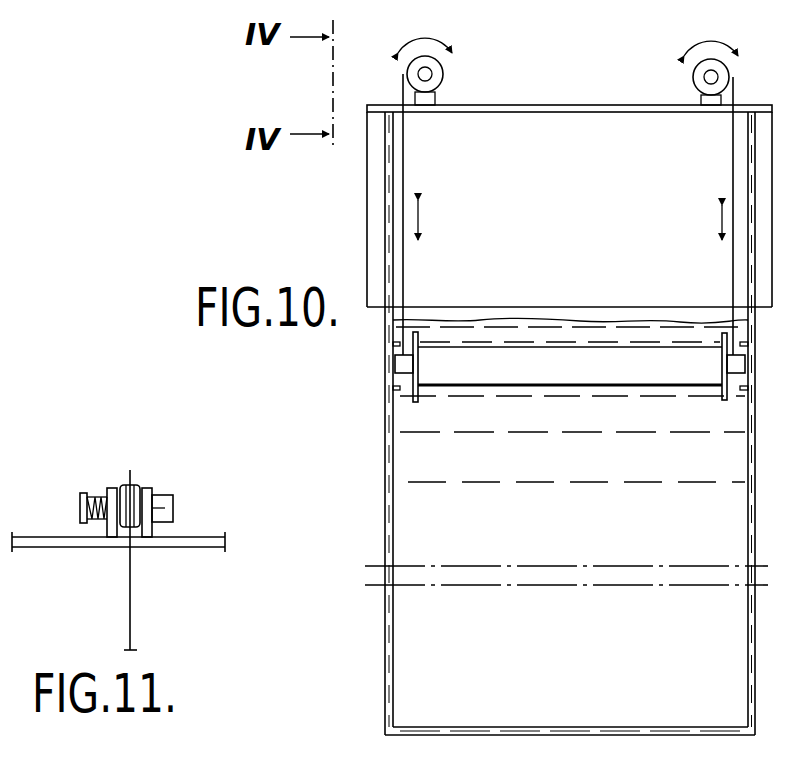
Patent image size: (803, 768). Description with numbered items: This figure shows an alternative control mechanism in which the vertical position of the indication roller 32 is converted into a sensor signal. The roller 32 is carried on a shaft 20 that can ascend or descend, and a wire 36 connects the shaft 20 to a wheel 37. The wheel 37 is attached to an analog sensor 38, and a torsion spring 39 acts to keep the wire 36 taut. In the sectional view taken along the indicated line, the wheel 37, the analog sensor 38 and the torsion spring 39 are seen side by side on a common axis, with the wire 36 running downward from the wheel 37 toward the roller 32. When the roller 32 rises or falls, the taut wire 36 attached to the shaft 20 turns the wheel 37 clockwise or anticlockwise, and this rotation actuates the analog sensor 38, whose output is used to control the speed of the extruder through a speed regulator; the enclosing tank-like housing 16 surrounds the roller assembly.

In FIG. 10, the tank 16 is at (387, 487).
In FIG. 10, the shaft 20 is at (388, 367).
In FIG. 10, the roller 32 is at (460, 375).
In FIG. 10, the wire 36 is at (403, 165).
In FIG. 11, the wire 36 is at (130, 596).
In FIG. 11, the wheel 37 is at (125, 487).
In FIG. 10, the analog sensor 38 is at (704, 75).
In FIG. 11, the analog sensor 38 is at (170, 500).
In FIG. 11, the torsion spring 39 is at (95, 495).